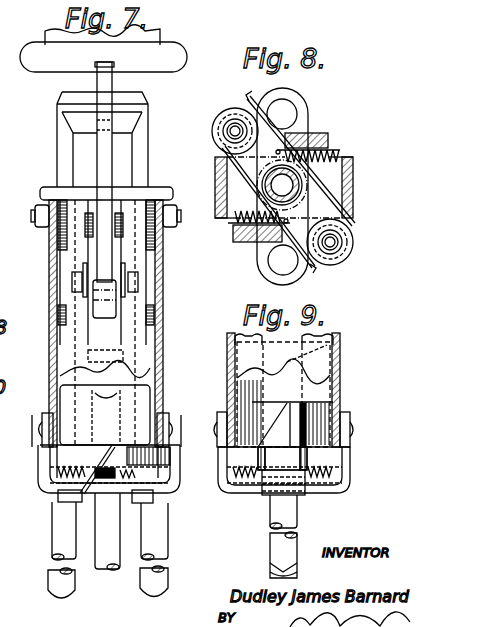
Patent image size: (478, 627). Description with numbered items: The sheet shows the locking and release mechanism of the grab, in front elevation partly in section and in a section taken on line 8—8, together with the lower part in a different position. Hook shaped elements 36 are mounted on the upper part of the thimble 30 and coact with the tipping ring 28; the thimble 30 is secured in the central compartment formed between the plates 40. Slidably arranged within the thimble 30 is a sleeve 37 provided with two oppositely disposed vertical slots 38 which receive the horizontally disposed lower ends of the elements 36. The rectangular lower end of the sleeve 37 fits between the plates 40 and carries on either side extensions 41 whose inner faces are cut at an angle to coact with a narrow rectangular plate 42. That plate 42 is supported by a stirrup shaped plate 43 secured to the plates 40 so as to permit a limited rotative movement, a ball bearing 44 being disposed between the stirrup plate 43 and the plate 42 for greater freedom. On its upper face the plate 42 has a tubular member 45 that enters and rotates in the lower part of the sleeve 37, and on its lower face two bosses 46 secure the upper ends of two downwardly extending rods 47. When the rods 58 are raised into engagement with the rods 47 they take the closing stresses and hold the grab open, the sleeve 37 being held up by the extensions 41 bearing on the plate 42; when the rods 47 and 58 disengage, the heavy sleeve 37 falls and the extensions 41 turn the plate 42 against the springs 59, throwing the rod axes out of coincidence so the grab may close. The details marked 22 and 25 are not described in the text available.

In FIG. 7, the grip body 22 is at (58, 0).
In FIG. 8, the handle portion 25 is at (306, 0).
In FIG. 7, the tipping ring 28 is at (65, 64).
In FIG. 7, the thimble 30 is at (146, 272).
In FIG. 7, the hook shaped elements 36 is at (105, 162).
In FIG. 7, the sleeve 37 is at (44, 464).
In FIG. 9, the sleeve 37 is at (318, 391).
In FIG. 7, the vertically arranged slots 38 is at (122, 312).
In FIG. 7, the plates 40 is at (54, 270).
In FIG. 9, the plates 40 is at (228, 396).
In FIG. 7, the extensions 41 is at (65, 502).
In FIG. 8, the extensions 41 is at (310, 134).
In FIG. 9, the extensions 41 is at (243, 434).
In FIG. 7, the narrow rectangular plate 42 is at (138, 445).
In FIG. 8, the narrow rectangular plate 42 is at (243, 163).
In FIG. 9, the narrow rectangular plate 42 is at (282, 456).
In FIG. 7, the stirrup shaped plate 43 is at (50, 496).
In FIG. 8, the stirrup shaped plate 43 is at (348, 160).
In FIG. 9, the stirrup shaped plate 43 is at (243, 487).
In FIG. 7, the ball bearing 44 is at (106, 479).
In FIG. 7, the tubular member 45 is at (93, 355).
In FIG. 9, the tubular member 45 is at (288, 362).
In FIG. 7, the bosses 46 is at (52, 493).
In FIG. 8, the bosses 46 is at (229, 122).
In FIG. 9, the bosses 46 is at (267, 494).
In FIG. 7, the downwardly extending rods 47 is at (143, 554).
In FIG. 8, the downwardly extending rods 47 is at (233, 126).
In FIG. 9, the downwardly extending rods 47 is at (283, 555).
In FIG. 7, the rods 58 is at (107, 531).
In FIG. 8, the springs 59 is at (322, 147).
In FIG. 7, the section line 8— 8 is at (106, 419).